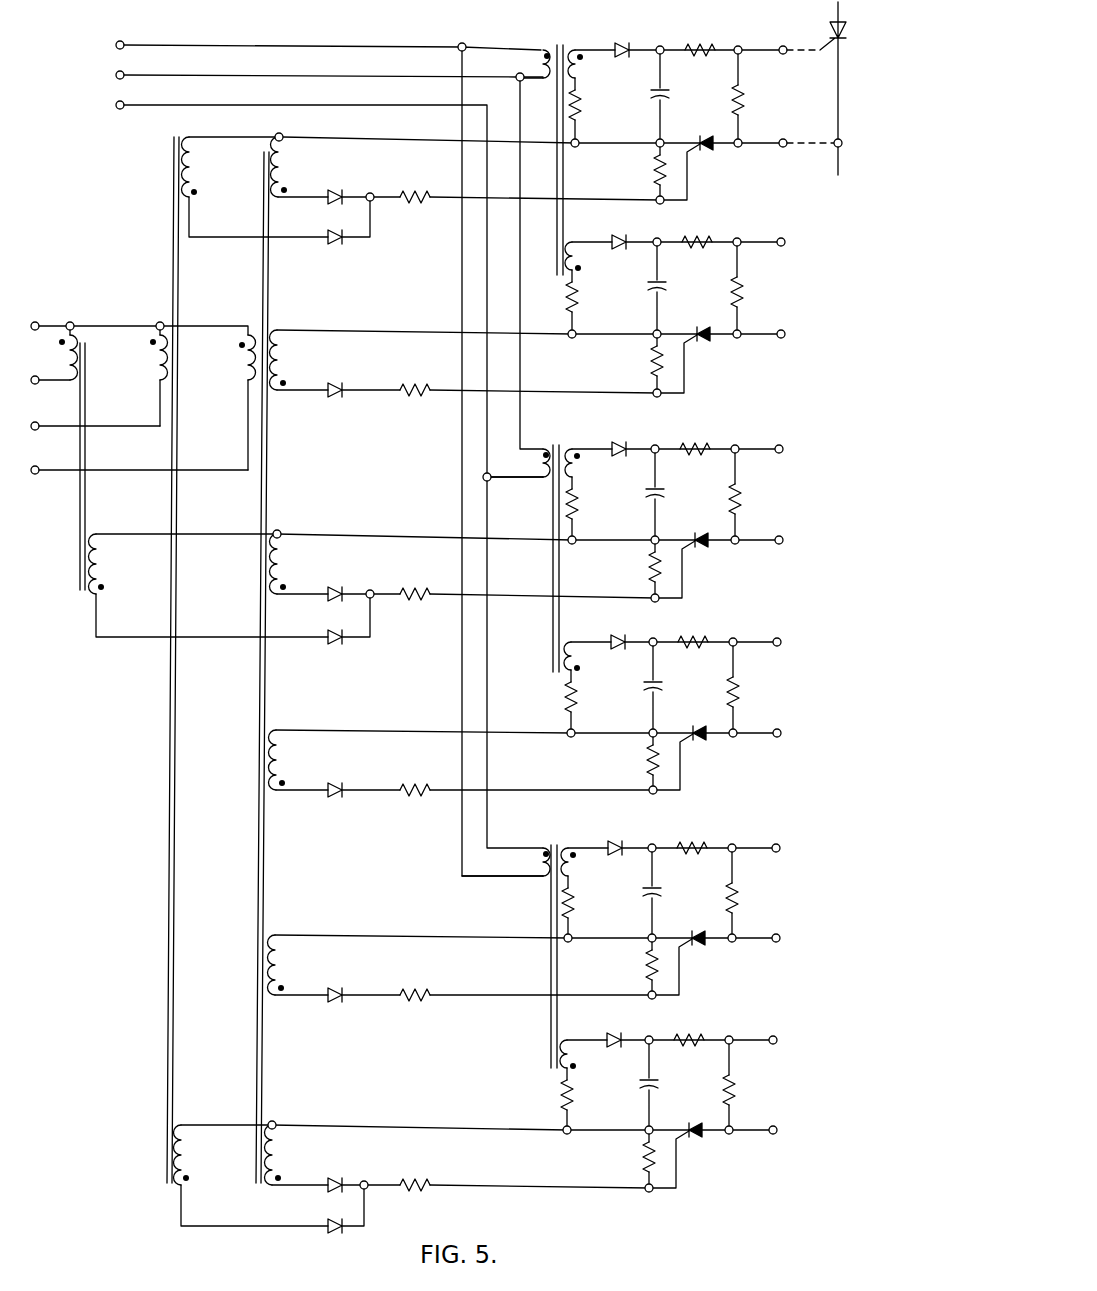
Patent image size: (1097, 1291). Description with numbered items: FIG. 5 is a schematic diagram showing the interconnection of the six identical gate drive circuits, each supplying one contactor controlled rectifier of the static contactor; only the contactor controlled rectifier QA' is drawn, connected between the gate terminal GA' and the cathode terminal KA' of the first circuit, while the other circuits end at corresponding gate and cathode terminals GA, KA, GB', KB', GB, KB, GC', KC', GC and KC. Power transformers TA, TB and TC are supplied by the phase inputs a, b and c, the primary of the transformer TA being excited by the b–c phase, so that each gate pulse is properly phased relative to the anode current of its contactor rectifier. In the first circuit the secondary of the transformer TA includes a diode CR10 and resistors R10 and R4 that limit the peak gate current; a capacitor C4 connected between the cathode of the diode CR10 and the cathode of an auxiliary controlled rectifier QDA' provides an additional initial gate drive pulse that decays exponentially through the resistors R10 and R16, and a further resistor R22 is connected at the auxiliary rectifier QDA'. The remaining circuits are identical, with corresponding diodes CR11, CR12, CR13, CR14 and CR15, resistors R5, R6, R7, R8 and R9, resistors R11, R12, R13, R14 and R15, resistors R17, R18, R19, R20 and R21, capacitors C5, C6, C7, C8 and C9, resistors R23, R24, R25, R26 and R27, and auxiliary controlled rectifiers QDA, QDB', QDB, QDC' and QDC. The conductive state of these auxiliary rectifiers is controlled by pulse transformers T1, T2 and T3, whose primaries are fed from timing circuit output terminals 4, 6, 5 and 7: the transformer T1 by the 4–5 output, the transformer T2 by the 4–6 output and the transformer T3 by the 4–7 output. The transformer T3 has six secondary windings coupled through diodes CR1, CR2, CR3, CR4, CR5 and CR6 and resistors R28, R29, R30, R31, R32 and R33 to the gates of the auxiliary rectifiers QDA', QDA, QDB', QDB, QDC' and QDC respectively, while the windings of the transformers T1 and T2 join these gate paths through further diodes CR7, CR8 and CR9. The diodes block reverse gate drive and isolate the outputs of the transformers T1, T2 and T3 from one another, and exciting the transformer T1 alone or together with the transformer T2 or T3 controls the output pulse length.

The phase input b is at (321, 456).
The phase input c is at (321, 257).
The phase input a is at (321, 472).
The timing circuit output terminal 4 is at (90, 326).
The timing circuit output terminal 6 is at (45, 380).
The timing circuit output terminal 5 is at (90, 426).
The timing circuit output terminal 7 is at (134, 470).
The pulse transformer T1 is at (173, 135).
The pulse transformer T2 is at (80, 583).
The pulse transformer T3 is at (263, 167).
The power transformer TA is at (558, 42).
The power transformer TB is at (558, 440).
The power transformer TC is at (555, 840).
The diode CR1 is at (334, 190).
The diode CR2 is at (334, 382).
The diode CR3 is at (332, 587).
The diode CR4 is at (333, 782).
The diode CR5 is at (332, 987).
The diode CR6 is at (332, 1177).
The diode CR7 is at (335, 250).
The diode CR8 is at (330, 650).
The diode CR9 is at (337, 1236).
The diode CR10 is at (626, 43).
The diode CR11 is at (623, 235).
The diode CR12 is at (623, 442).
The diode CR13 is at (622, 635).
The diode CR14 is at (619, 841).
The diode CR15 is at (618, 1033).
The resistor R4 is at (585, 122).
The resistor R5 is at (582, 314).
The resistor R6 is at (582, 521).
The resistor R7 is at (581, 714).
The resistor R8 is at (578, 920).
The resistor R9 is at (577, 1112).
The resistor R10 is at (711, 43).
The resistor R11 is at (708, 235).
The resistor R12 is at (706, 442).
The resistor R13 is at (704, 635).
The resistor R14 is at (703, 841).
The resistor R15 is at (700, 1033).
The resistor R16 is at (730, 96).
The resistor R17 is at (729, 288).
The resistor R18 is at (727, 495).
The resistor R19 is at (725, 688).
The resistor R20 is at (724, 894).
The resistor R21 is at (721, 1086).
The resistor R22 is at (644, 181).
The resistor R23 is at (641, 372).
The resistor R24 is at (639, 578).
The resistor R25 is at (637, 771).
The resistor R26 is at (636, 976).
The resistor R27 is at (633, 1168).
The resistor R28 is at (401, 190).
The resistor R29 is at (401, 382).
The resistor R30 is at (401, 587).
The resistor R31 is at (401, 782).
The resistor R32 is at (405, 987).
The resistor R33 is at (413, 1177).
The capacitor C4 is at (644, 94).
The capacitor C5 is at (641, 286).
The capacitor C6 is at (639, 493).
The capacitor C7 is at (637, 686).
The capacitor C8 is at (636, 892).
The capacitor C9 is at (633, 1084).
The auxiliary controlled rectifier QDA' is at (696, 125).
The auxiliary controlled rectifier QDA is at (693, 317).
The auxiliary controlled rectifier QDB' is at (691, 523).
The auxiliary controlled rectifier QDB is at (689, 716).
The auxiliary controlled rectifier QDC' is at (688, 922).
The auxiliary controlled rectifier QDC is at (685, 1114).
The contactor controlled rectifier QA' is at (816, 88).
The gate output terminal GA' is at (783, 65).
The gate output terminal GA is at (779, 257).
The gate output terminal GB' is at (779, 464).
The gate output terminal GB is at (775, 657).
The gate output terminal GC' is at (776, 863).
The gate output terminal GC is at (771, 1055).
The cathode output terminal KA' is at (782, 158).
The cathode output terminal KA is at (779, 349).
The cathode output terminal KB' is at (778, 555).
The cathode output terminal KB is at (774, 748).
The cathode output terminal KC' is at (775, 953).
The cathode output terminal KC is at (770, 1145).